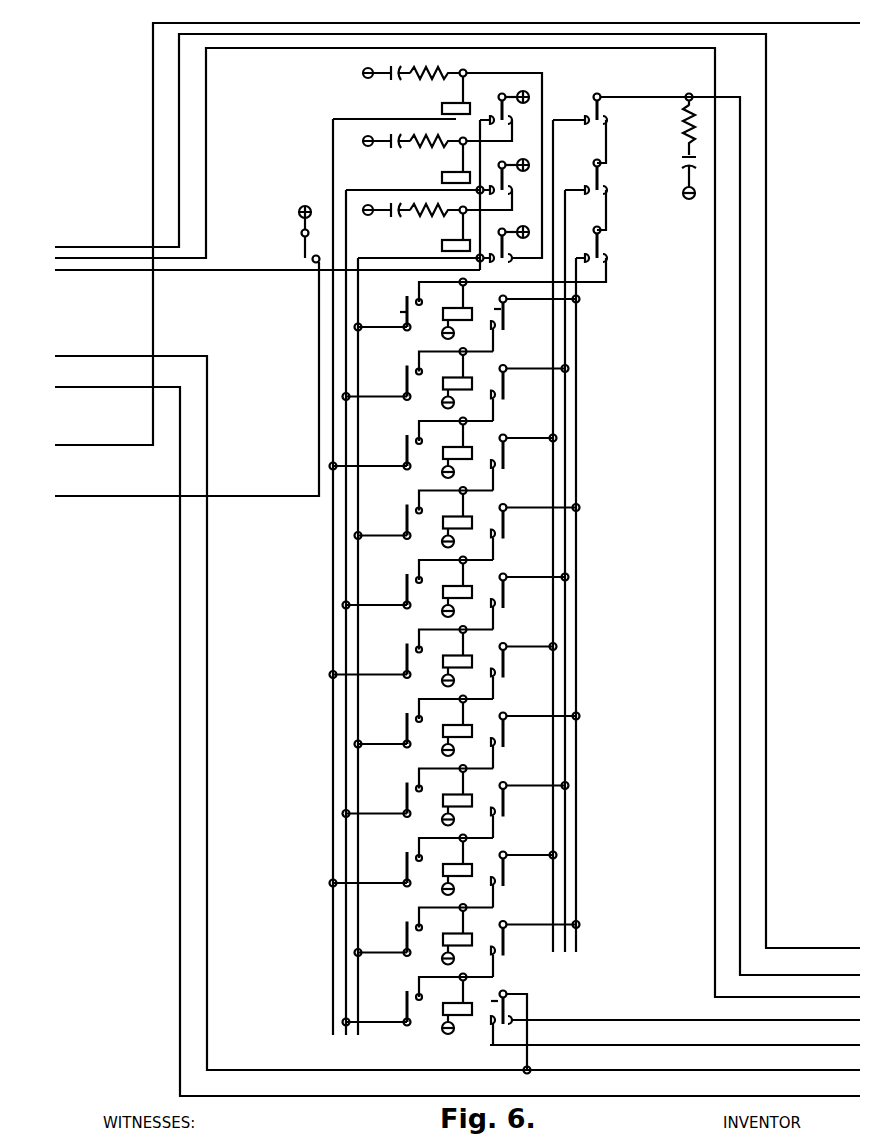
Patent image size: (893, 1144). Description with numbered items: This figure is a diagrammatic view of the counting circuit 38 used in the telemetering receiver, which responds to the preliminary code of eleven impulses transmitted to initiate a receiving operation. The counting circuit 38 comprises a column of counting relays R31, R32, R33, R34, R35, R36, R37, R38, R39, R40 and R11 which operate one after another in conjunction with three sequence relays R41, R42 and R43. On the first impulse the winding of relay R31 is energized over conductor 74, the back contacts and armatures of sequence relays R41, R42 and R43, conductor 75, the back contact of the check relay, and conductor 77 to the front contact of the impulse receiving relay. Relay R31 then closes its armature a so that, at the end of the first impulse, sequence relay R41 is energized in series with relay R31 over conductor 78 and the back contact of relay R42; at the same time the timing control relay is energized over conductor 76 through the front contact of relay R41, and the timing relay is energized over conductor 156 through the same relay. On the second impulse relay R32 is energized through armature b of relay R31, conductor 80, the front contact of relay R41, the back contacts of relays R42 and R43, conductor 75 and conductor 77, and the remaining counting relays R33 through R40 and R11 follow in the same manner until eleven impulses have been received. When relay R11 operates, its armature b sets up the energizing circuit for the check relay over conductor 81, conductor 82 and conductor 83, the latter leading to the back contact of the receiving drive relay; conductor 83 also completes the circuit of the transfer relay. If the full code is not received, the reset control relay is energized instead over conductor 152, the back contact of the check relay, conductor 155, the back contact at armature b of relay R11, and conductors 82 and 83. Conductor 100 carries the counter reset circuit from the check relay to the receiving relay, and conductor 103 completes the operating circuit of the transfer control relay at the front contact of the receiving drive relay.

The conductor 77 is at (766, 868).
The conductor 100 is at (206, 202).
The conductor 152 is at (80, 447).
The conductor 156 is at (270, 274).
The conductor 76 is at (89, 496).
The conductor 83 is at (213, 840).
The conductor 103 is at (627, 1099).
The conductor 75 is at (668, 97).
The conductor 74 is at (545, 283).
The conductor 78 is at (375, 300).
The conductor 80 is at (554, 300).
The counting circuit 38 is at (642, 389).
The conductor 82 is at (535, 1013).
The conductor 81 is at (586, 1045).
The conductor 155 is at (546, 1020).
The counting relay R31 is at (467, 315).
The counting relay R32 is at (456, 384).
The counting relay R33 is at (443, 454).
The counting relay R34 is at (467, 523).
The counting relay R35 is at (456, 593).
The counting relay R36 is at (443, 662).
The counting relay R37 is at (467, 732).
The counting relay R38 is at (456, 801).
The counting relay R39 is at (443, 871).
The counting relay R40 is at (467, 940).
The counting relay R11 is at (443, 1015).
The sequence relay R41 is at (442, 247).
The sequence relay R42 is at (442, 180).
The sequence relay R43 is at (442, 111).